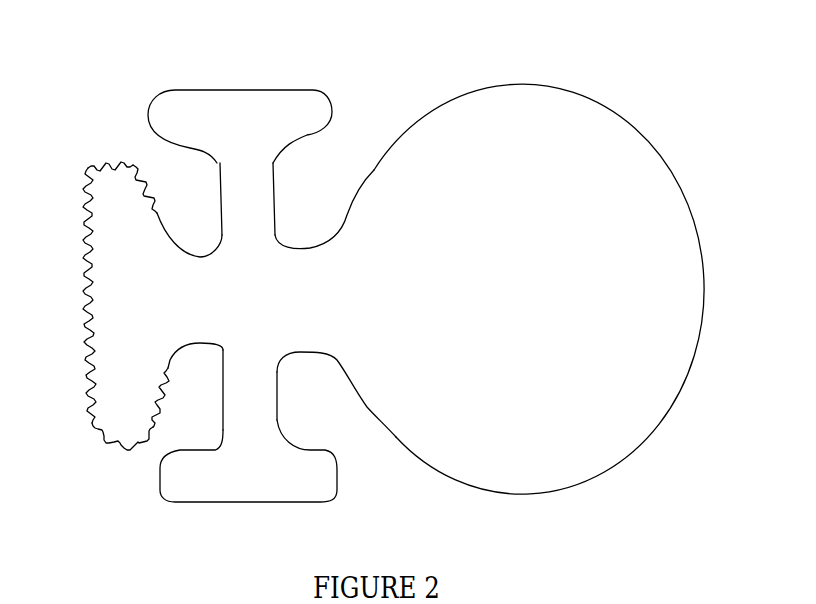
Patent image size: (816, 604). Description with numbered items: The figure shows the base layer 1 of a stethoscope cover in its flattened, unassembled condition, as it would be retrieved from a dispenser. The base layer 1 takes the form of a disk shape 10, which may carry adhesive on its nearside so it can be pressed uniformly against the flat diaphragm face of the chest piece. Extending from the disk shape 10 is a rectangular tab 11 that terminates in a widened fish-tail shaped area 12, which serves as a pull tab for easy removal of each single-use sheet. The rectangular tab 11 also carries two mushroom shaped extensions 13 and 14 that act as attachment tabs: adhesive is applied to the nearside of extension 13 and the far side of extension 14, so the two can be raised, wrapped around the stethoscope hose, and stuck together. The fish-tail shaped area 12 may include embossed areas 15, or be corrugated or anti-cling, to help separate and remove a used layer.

The base layer 1 is at (602, 470).
The disk shape 10 is at (648, 188).
The rectangular tab 11 is at (204, 300).
The fish-tail shaped area 12 is at (117, 265).
The mushroom shaped extension 13 is at (238, 110).
The mushroom shaped extension 14 is at (219, 473).
The embossed areas 15 is at (91, 424).